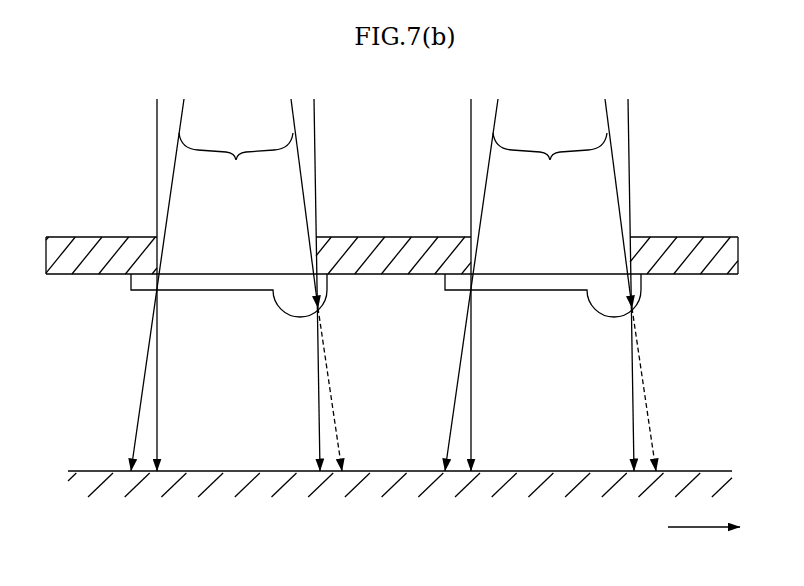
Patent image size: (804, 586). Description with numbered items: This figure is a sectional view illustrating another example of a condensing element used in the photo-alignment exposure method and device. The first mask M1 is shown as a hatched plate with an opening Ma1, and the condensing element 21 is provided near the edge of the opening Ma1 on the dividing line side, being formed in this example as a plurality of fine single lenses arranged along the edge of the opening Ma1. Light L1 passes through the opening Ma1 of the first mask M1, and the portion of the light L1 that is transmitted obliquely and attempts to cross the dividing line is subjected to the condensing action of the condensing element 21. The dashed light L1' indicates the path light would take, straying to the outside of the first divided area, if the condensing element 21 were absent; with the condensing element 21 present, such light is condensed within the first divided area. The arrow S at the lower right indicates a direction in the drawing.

The first mask M1 is at (723, 238).
The condensing element 21 is at (291, 316).
The light L1 is at (382, 285).
The opening Ma1 is at (313, 250).
The light L1' is at (508, 389).
The scanning direction S is at (712, 527).